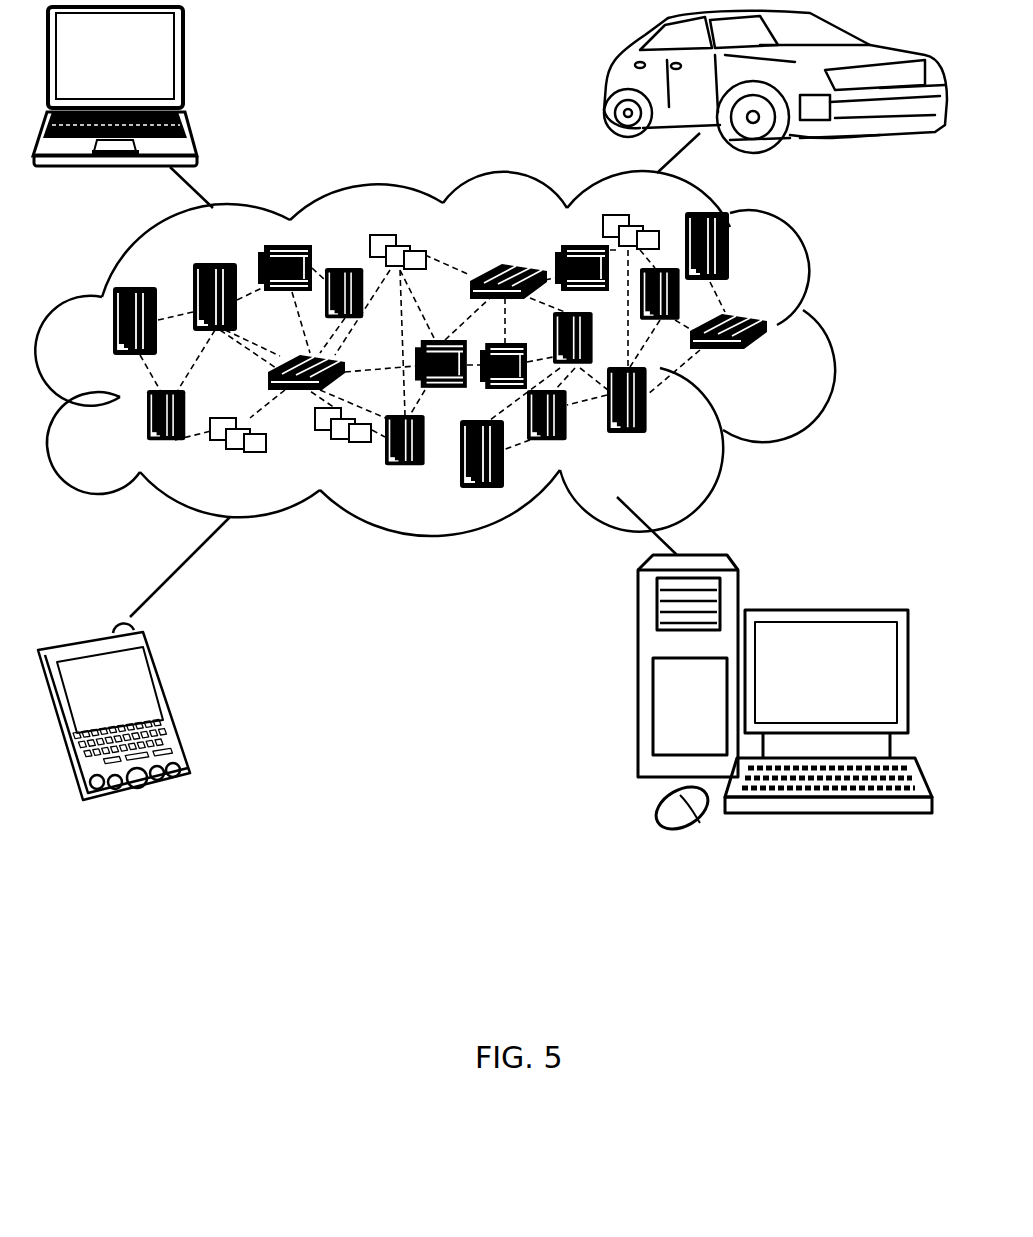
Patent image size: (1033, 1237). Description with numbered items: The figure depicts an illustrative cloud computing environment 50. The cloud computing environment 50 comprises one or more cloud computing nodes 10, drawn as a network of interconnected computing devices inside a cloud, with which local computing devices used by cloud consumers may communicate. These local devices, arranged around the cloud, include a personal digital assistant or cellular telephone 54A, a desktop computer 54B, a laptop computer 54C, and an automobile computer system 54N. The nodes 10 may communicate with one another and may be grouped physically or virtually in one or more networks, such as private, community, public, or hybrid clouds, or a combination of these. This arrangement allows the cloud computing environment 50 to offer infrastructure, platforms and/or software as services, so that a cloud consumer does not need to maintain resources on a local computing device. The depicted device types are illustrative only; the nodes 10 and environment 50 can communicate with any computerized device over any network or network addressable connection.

The cloud computing environment 50 is at (826, 328).
The cloud computing nodes 10 is at (767, 360).
The personal digital assistant (PDA) or cellular telephone 54A is at (170, 700).
The desktop computer 54B is at (823, 610).
The laptop computer 54C is at (186, 64).
The automobile computer system 54N is at (610, 78).